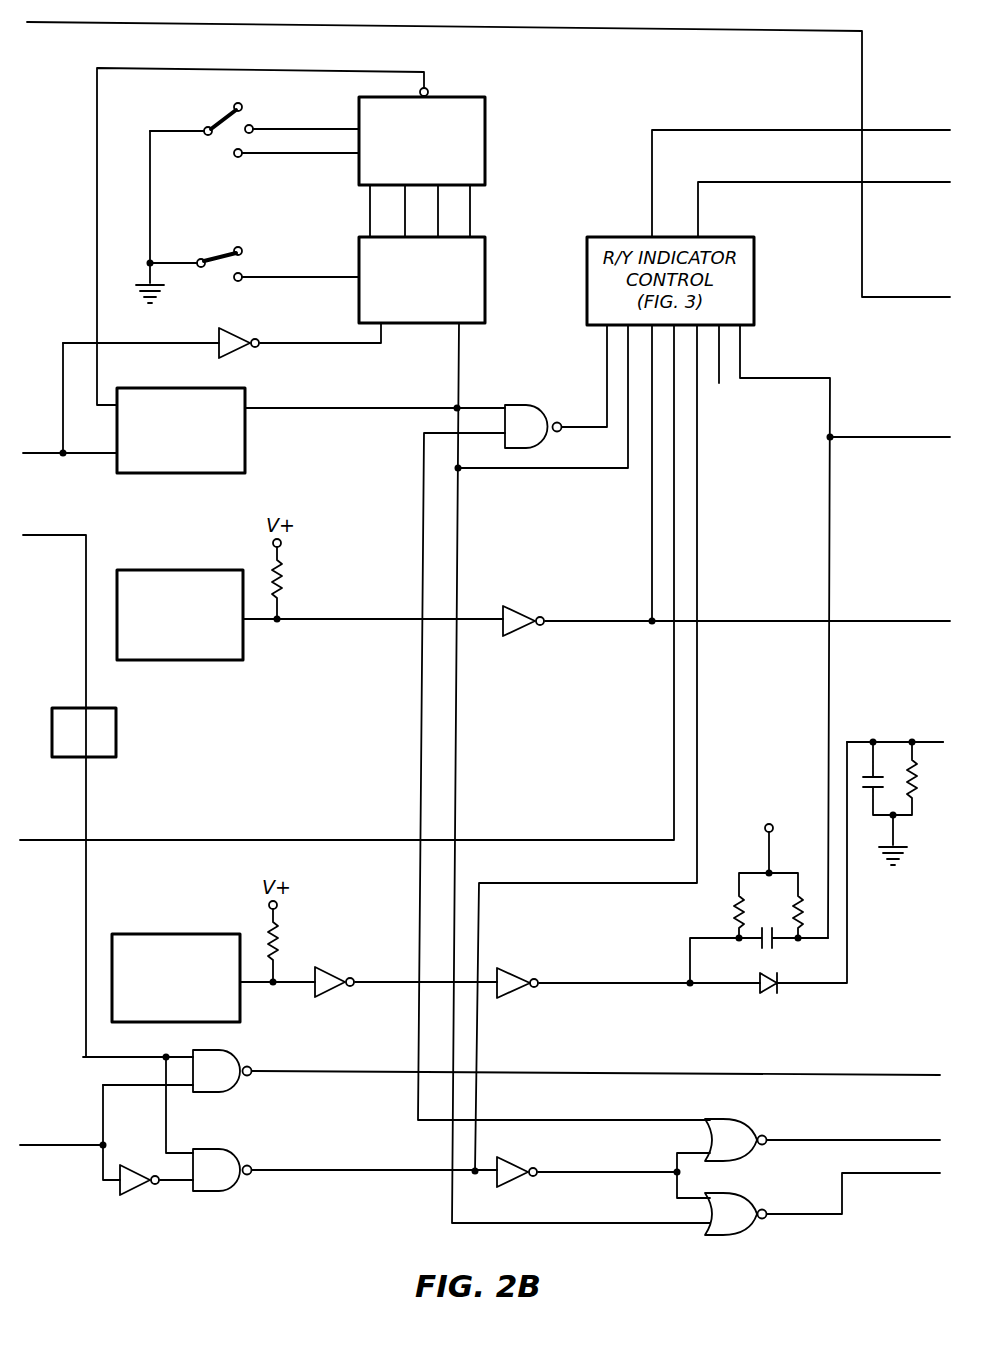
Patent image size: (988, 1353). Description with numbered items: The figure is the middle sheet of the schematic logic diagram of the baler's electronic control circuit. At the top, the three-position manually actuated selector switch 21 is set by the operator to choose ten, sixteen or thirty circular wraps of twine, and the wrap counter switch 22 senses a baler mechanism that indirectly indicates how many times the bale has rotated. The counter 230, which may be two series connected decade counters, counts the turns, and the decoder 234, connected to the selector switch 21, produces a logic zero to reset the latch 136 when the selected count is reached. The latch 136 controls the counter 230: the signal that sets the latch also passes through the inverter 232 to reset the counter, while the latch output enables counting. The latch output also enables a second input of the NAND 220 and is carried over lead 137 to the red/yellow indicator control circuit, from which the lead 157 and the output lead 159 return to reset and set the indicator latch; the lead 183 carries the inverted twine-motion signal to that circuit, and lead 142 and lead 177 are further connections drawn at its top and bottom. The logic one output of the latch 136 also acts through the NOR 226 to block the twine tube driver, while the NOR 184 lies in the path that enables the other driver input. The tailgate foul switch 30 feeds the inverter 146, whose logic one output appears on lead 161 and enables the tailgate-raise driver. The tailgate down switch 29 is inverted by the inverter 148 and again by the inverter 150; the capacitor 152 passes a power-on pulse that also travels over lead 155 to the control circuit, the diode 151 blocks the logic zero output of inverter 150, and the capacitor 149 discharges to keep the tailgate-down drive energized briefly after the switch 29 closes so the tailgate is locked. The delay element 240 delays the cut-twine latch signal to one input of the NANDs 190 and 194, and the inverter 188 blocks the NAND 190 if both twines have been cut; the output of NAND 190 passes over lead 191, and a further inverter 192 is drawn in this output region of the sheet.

The selector switch 21 is at (212, 124).
The wrap counter switch 22 is at (216, 257).
The decoder 234 is at (467, 97).
The wrap counter 230 is at (485, 247).
The inverter 232 is at (241, 339).
The latch 136 is at (238, 444).
The line 142 is at (633, 33).
The lead 157 is at (690, 130).
The output lead 159 is at (750, 182).
The lead 155 is at (812, 378).
The output line 177 is at (719, 383).
The lead 191 is at (697, 457).
The lead 183 is at (674, 498).
The lead 161 is at (652, 524).
The lead 137 is at (545, 474).
The NAND 220 is at (528, 405).
The tailgate foul switch 30 is at (206, 571).
The inverter 146 is at (514, 607).
The delay element 240 is at (118, 735).
The tailgate down switch 29 is at (178, 936).
The inverter 148 is at (331, 970).
The inverter 150 is at (512, 976).
The diode 151 is at (770, 998).
The capacitor 152 is at (772, 946).
The capacitor 149 is at (862, 780).
The NAND 194 is at (236, 1053).
The NAND 190 is at (234, 1149).
The inverter 188 is at (138, 1193).
The inverter 192 is at (511, 1168).
The NOR 184 is at (750, 1125).
The NOR 226 is at (741, 1207).